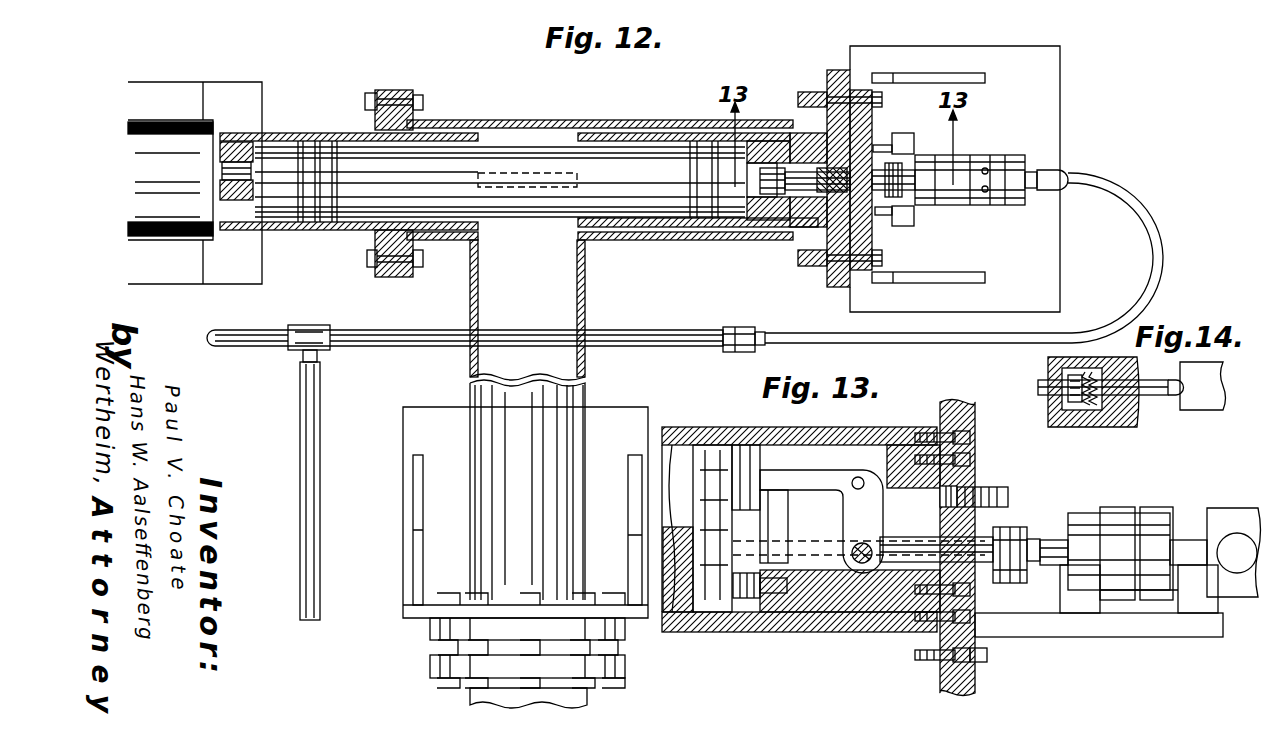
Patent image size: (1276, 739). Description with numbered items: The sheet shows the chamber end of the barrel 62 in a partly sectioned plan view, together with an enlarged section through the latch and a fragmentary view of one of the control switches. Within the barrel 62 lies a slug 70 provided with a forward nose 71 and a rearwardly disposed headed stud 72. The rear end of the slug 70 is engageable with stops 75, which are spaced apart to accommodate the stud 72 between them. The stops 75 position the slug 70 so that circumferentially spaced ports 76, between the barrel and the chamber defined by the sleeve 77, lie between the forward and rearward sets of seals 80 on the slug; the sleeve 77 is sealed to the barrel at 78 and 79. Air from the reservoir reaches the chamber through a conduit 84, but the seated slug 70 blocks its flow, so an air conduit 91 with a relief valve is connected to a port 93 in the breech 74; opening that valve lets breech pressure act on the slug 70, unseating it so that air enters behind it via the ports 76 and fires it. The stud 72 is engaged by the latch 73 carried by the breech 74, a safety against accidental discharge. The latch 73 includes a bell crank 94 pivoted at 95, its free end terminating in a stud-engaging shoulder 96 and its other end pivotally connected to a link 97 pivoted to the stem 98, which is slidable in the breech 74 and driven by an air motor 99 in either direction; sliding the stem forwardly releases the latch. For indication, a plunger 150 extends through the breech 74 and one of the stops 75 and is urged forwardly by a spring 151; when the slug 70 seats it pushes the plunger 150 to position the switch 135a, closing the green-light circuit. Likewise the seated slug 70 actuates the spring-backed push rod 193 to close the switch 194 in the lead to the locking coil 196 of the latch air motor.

In FIG. 12, the barrel 62 is at (332, 231).
In FIG. 13, the barrel 62 is at (752, 632).
In FIG. 12, the slug 70 is at (352, 147).
In FIG. 13, the slug 70 is at (710, 620).
In FIG. 12, the nose 71 is at (235, 142).
In FIG. 12, the headed stud 72 is at (757, 163).
In FIG. 13, the headed stud 72 is at (780, 530).
In FIG. 12, the latch 73 is at (775, 222).
In FIG. 13, the latch 73 is at (831, 460).
In FIG. 12, the breech 74 is at (880, 110).
In FIG. 13, the breech 74 is at (975, 416).
In FIG. 12, the stops 75 is at (786, 135).
In FIG. 12, the ports 76 is at (532, 166).
In FIG. 12, the sleeve 77 is at (592, 120).
In FIG. 12, the seal 78 is at (397, 92).
In FIG. 12, the seal 79 is at (818, 88).
In FIG. 12, the seals 80 is at (316, 141).
In FIG. 12, the conduit 84 is at (470, 301).
In FIG. 12, the air conduit 91 is at (1150, 208).
In FIG. 13, the air conduit 91 is at (1008, 500).
In FIG. 13, the port 93 is at (973, 481).
In FIG. 13, the bell crank 94 is at (870, 512).
In FIG. 13, the pivot 95 is at (850, 490).
In FIG. 13, the stud-engaging shoulder 96 is at (755, 427).
In FIG. 13, the link 97 is at (875, 565).
In FIG. 13, the stem 98 is at (990, 565).
In FIG. 13, the air motor 99 is at (1145, 508).
In FIG. 12, the switch 135a is at (915, 147).
In FIG. 14, the switch 135a is at (1205, 400).
In FIG. 12, the plunger 150 is at (890, 140).
In FIG. 14, the plunger 150 is at (1153, 397).
In FIG. 14, the spring 151 is at (1092, 410).
In FIG. 12, the push rod 193 is at (888, 215).
In FIG. 12, the switch 194 is at (914, 217).
In FIG. 12, the locking coil 196 is at (1003, 158).